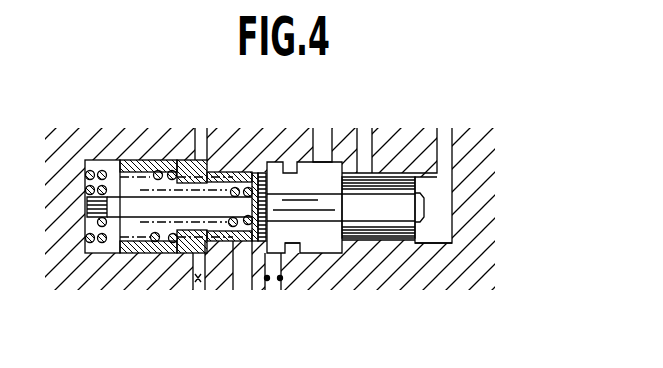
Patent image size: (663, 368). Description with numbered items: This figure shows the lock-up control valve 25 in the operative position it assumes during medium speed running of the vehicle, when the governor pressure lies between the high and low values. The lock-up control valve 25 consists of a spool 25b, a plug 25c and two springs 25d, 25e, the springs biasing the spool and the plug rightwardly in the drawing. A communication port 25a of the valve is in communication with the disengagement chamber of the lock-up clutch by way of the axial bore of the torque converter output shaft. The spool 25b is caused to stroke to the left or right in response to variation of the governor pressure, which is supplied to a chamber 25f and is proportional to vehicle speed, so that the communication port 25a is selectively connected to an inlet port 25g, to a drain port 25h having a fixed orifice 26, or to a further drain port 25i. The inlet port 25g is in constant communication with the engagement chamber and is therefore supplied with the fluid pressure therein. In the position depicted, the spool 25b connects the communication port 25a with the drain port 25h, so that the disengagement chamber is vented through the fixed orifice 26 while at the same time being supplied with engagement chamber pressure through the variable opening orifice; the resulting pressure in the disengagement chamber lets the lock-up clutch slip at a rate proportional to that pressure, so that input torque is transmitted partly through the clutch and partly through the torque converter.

The lock-up control valve 25 is at (483, 222).
The communication port 25a is at (276, 290).
The spool 25b is at (416, 190).
The plug 25c is at (173, 243).
The spring 25d is at (113, 188).
The spring 25e is at (100, 243).
The chamber 25f is at (445, 244).
The inlet port 25g is at (364, 138).
The drain port 25h is at (287, 253).
The drain port 25i is at (243, 290).
The fixed orifice 26 is at (283, 281).